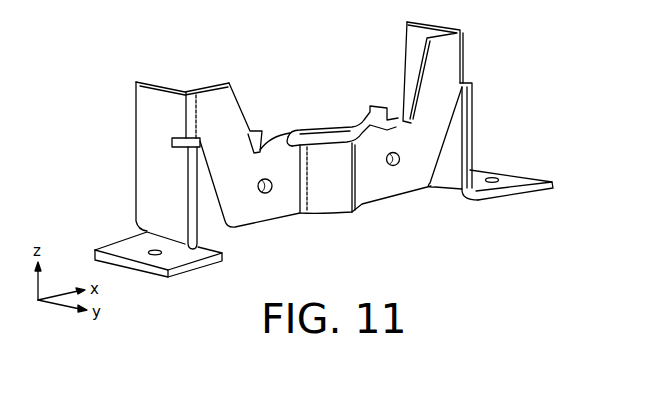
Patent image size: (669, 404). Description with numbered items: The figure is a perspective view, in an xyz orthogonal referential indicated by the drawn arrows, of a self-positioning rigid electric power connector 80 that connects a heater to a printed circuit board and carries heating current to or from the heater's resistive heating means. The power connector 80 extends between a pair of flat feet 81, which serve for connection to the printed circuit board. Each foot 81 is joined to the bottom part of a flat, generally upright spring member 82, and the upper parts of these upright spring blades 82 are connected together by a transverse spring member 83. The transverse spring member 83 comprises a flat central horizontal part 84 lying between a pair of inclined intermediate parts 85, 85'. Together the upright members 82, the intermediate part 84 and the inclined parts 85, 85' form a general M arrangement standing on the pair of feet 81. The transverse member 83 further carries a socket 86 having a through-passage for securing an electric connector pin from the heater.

The self-positioning rigid electric power connector 80 is at (487, 58).
The flat feet 81 is at (225, 257).
The upright spring member 82 is at (152, 176).
The transverse spring member 83 is at (400, 182).
The flat central horizontal part 84 is at (284, 204).
The inclined intermediate part 85 is at (260, 118).
The inclined intermediate part 85' is at (462, 72).
The socket 86 is at (312, 128).